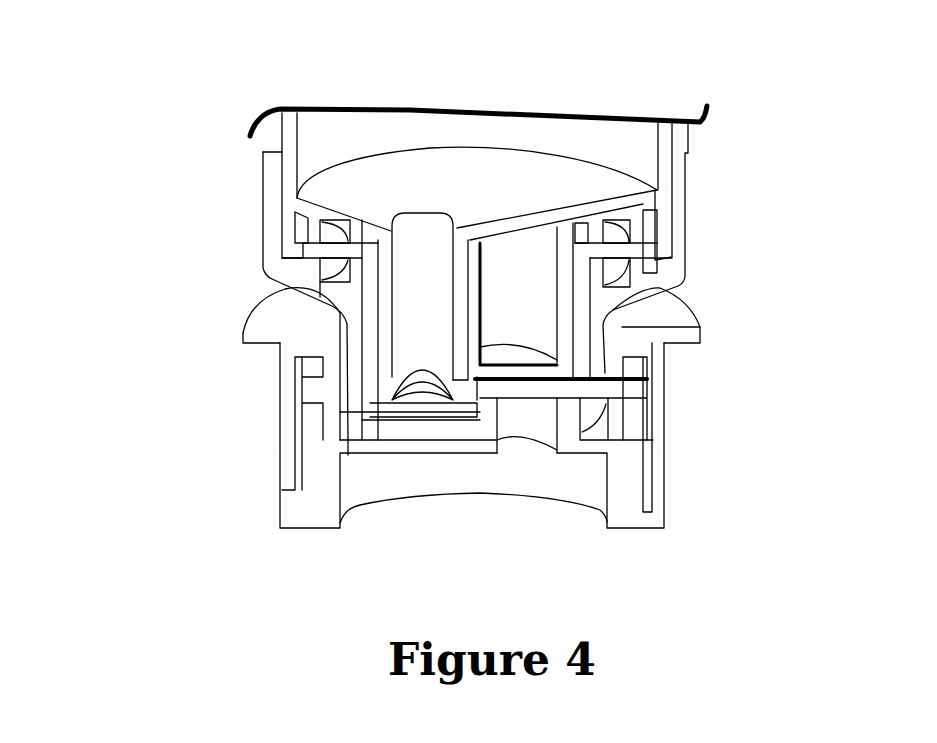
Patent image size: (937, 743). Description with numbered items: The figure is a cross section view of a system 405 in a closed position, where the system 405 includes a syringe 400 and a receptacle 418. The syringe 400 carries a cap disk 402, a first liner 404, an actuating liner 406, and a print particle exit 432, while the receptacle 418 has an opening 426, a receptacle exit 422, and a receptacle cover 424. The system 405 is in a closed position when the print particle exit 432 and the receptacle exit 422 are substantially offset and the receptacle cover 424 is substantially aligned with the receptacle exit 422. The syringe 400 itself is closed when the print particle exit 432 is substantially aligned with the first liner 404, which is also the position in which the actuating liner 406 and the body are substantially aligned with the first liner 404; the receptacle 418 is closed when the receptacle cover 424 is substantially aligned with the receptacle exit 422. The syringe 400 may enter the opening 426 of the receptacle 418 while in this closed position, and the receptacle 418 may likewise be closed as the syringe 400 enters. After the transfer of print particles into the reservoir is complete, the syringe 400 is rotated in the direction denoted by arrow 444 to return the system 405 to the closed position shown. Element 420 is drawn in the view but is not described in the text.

The syringe 400 is at (484, 96).
The arrow 444 is at (198, 26).
The system 405 is at (200, 192).
The print particle exit 432 is at (420, 262).
The actuating liner 406 is at (400, 373).
The first liner 404 is at (393, 405).
The cap disk 402 is at (393, 428).
The opening 426 is at (665, 346).
The receptacle cover 424 is at (665, 375).
The closure collar 420 is at (665, 473).
The receptacle exit 422 is at (527, 423).
The receptacle 418 is at (484, 530).